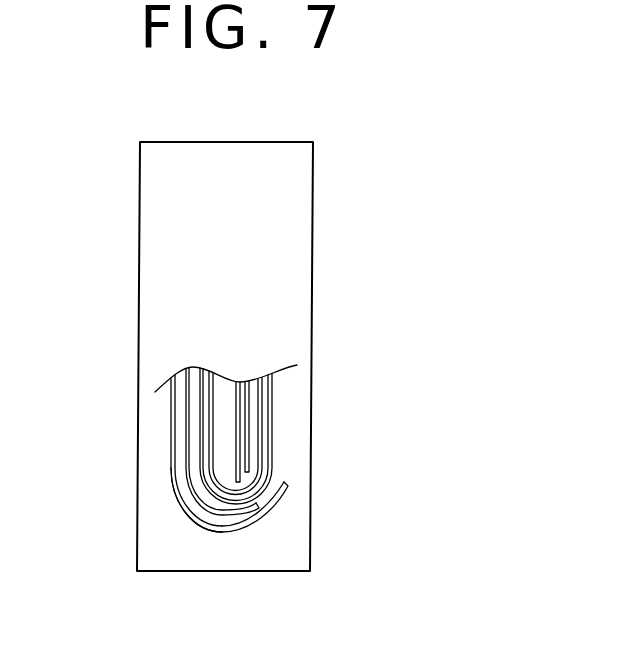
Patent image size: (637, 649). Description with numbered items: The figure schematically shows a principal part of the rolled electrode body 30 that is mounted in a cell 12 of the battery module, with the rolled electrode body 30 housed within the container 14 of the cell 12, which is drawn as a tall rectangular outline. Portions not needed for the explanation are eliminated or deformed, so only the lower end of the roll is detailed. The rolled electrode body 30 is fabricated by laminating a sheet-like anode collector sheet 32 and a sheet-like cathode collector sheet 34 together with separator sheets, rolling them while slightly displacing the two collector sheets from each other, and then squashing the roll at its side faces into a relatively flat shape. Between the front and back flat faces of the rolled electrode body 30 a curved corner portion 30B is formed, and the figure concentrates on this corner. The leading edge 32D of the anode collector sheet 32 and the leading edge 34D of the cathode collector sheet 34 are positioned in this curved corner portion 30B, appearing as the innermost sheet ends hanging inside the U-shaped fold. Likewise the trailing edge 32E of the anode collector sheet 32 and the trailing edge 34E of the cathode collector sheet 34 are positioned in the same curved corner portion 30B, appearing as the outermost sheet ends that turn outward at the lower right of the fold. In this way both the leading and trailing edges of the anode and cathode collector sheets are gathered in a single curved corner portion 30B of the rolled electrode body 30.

The cell 12 is at (298, 356).
The container 14 is at (313, 177).
The rolled electrode body 30 is at (242, 499).
The curved corner portion 30B is at (225, 537).
The anode collector sheet 32 is at (184, 426).
The leading edge of the anode collector sheet 32D is at (236, 478).
The trailing edge of the anode collector sheet 32E is at (282, 482).
The cathode collector sheet 34 is at (192, 461).
The leading edge of the cathode collector sheet 34D is at (247, 472).
The trailing edge of the cathode collector sheet 34E is at (289, 487).